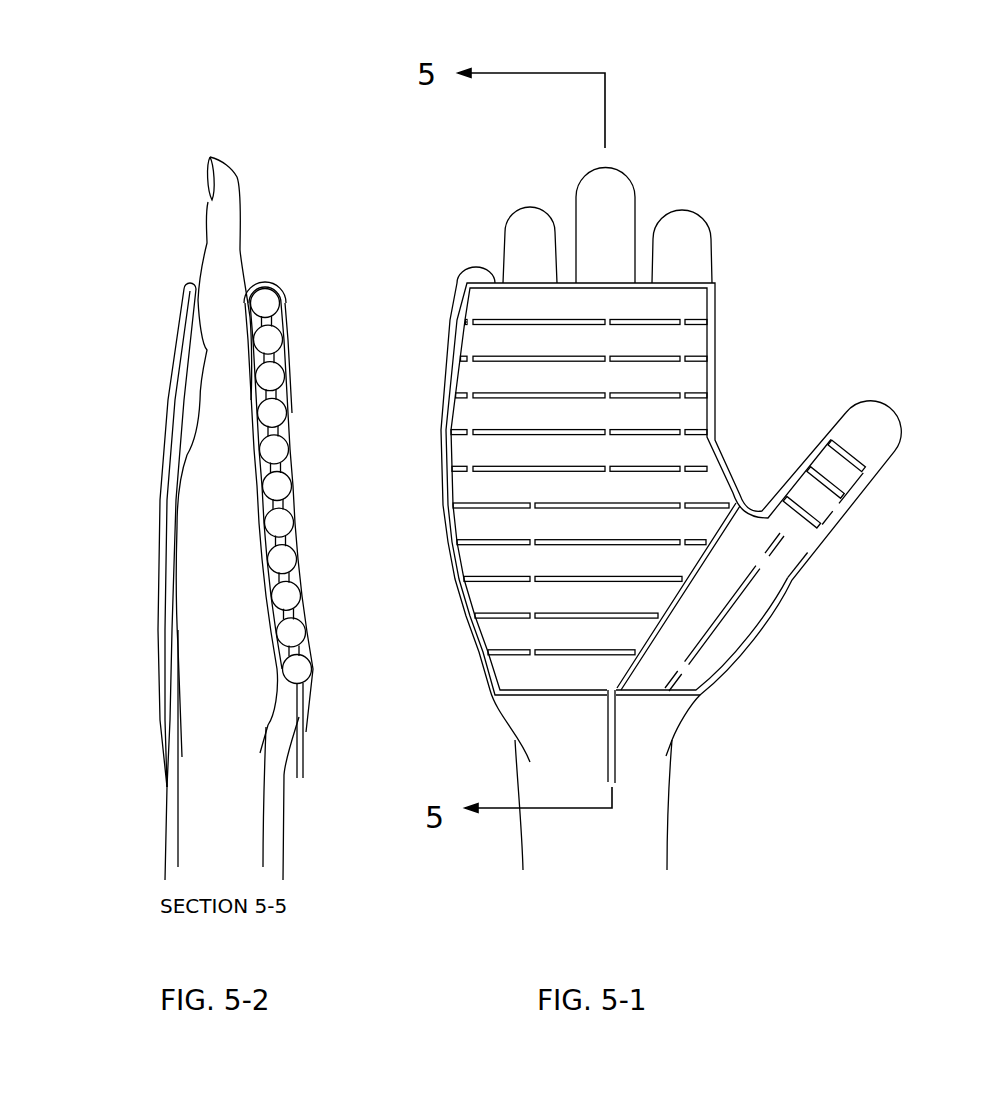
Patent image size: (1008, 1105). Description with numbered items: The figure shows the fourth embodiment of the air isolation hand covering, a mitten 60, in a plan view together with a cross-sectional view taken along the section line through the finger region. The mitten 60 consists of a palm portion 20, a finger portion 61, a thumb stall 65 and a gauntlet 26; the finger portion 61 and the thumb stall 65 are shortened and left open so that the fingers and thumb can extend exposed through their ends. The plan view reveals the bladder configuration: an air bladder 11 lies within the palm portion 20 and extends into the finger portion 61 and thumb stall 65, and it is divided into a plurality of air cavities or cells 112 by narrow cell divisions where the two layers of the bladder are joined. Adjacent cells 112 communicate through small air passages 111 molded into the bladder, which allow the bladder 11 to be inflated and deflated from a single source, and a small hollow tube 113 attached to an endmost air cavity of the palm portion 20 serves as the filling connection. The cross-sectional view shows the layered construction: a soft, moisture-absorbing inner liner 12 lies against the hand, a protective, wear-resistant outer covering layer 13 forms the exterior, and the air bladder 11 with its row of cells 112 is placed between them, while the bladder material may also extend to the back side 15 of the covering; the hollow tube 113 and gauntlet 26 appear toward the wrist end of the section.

In FIG. 5-2, the air bladder 11 is at (307, 607).
In FIG. 5-2, the inner liner 12 is at (265, 463).
In FIG. 5-2, the outer covering layer 13 is at (297, 500).
In FIG. 5-2, the back side 15 is at (172, 378).
In FIG. 5-1, the palm portion 20 is at (598, 562).
In FIG. 5-2, the gauntlet 26 is at (288, 848).
In FIG. 5-1, the mitten 60 is at (763, 372).
In FIG. 5-2, the mitten 60 is at (130, 265).
In FIG. 5-1, the finger portion 61 is at (587, 342).
In FIG. 5-1, the thumb stall 65 is at (838, 473).
In FIG. 5-1, the air passages 111 is at (530, 648).
In FIG. 5-2, the air passages 111 is at (273, 392).
In FIG. 5-1, the air cavities or cells 112 is at (500, 562).
In FIG. 5-2, the air cavities or cells 112 is at (267, 343).
In FIG. 5-1, the hollow tube 113 is at (607, 747).
In FIG. 5-2, the hollow tube 113 is at (307, 765).